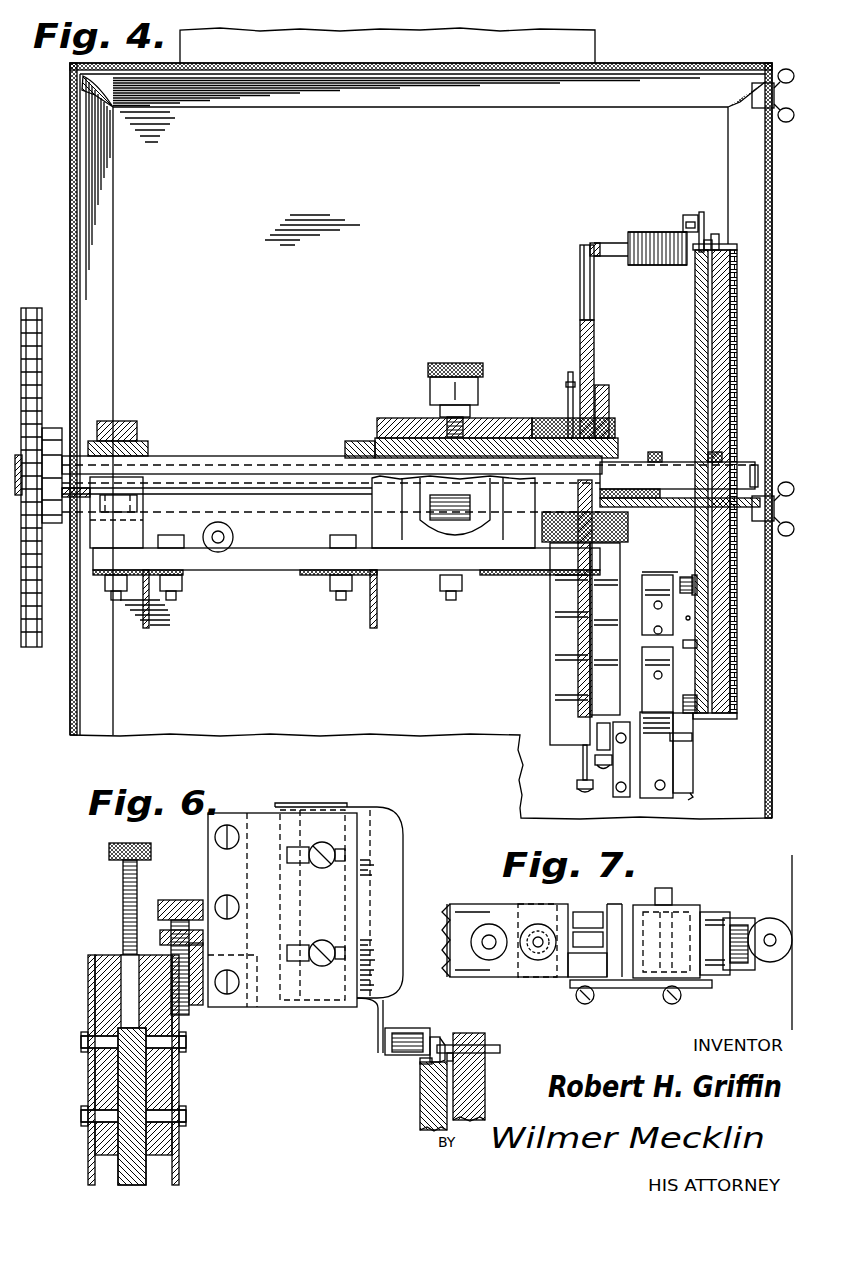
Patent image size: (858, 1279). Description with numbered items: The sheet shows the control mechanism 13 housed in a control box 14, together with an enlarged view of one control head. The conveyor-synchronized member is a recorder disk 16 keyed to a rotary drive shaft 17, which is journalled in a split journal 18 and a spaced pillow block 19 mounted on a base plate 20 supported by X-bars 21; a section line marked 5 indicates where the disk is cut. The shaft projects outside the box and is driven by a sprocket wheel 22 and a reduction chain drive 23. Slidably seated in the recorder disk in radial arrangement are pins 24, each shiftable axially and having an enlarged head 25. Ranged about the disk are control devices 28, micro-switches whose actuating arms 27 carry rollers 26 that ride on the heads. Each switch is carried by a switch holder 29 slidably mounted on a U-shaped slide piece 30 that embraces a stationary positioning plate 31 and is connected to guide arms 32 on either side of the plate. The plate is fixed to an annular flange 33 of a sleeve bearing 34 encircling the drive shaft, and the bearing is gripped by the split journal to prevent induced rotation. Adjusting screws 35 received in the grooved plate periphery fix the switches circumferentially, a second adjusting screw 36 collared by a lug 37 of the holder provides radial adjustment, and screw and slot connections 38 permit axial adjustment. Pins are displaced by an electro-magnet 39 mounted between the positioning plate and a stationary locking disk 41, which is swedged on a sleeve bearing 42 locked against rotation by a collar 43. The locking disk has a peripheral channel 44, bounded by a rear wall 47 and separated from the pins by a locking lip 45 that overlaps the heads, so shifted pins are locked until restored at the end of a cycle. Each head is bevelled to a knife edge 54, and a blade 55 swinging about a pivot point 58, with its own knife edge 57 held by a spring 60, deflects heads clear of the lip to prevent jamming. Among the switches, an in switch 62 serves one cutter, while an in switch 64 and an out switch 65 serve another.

In FIG. 4, the section line 5- 5 is at (322, 756).
In FIG. 4, the control mechanism 13 is at (567, 325).
In FIG. 4, the control box 14 is at (690, 70).
In FIG. 4, the recorder disk 16 is at (730, 312).
In FIG. 7, the recorder disk 16 is at (482, 1095).
In FIG. 4, the drive shaft 17 is at (628, 472).
In FIG. 4, the split journal 18 is at (426, 552).
In FIG. 4, the pillow block 19 is at (148, 440).
In FIG. 4, the base plate 20 is at (286, 572).
In FIG. 4, the X-bars 21 is at (150, 613).
In FIG. 4, the sprocket wheel 22 is at (52, 526).
In FIG. 4, the reduction chain drive 23 is at (24, 312).
In FIG. 4, the pins 24 is at (732, 251).
In FIG. 7, the pins 24 is at (498, 1044).
In FIG. 4, the enlarged head 25 is at (702, 719).
In FIG. 7, the enlarged head 25 is at (445, 1042).
In FIG. 4, the rollers 26 is at (695, 581).
In FIG. 6, the rollers 26 is at (392, 1057).
In FIG. 7, the rollers 26 is at (770, 963).
In FIG. 4, the actuating arms 27 is at (697, 591).
In FIG. 6, the actuating arms 27 is at (378, 1029).
In FIG. 7, the actuating arms 27 is at (758, 930).
In FIG. 4, the control devices 28 is at (683, 776).
In FIG. 6, the control devices 28 is at (390, 852).
In FIG. 7, the control devices 28 is at (702, 908).
In FIG. 6, the switch holder 29 is at (241, 1008).
In FIG. 7, the switch holder 29 is at (626, 990).
In FIG. 4, the slide piece 30 is at (670, 573).
In FIG. 6, the slide piece 30 is at (93, 947).
In FIG. 7, the slide piece 30 is at (464, 903).
In FIG. 4, the positioning plate 31 is at (580, 332).
In FIG. 6, the positioning plate 31 is at (142, 1160).
In FIG. 4, the guide arms 32 is at (566, 378).
In FIG. 6, the guide arms 32 is at (82, 1160).
In FIG. 7, the guide arms 32 is at (448, 903).
In FIG. 4, the annular flange 33 is at (604, 385).
In FIG. 4, the sleeve bearing 34 is at (512, 434).
In FIG. 4, the adjusting screws 35 is at (578, 790).
In FIG. 6, the adjusting screws 35 is at (104, 853).
In FIG. 7, the adjusting screws 35 is at (495, 925).
In FIG. 4, the second adjusting screw 36 is at (603, 766).
In FIG. 6, the second adjusting screw 36 is at (168, 892).
In FIG. 7, the second adjusting screw 36 is at (530, 960).
In FIG. 4, the lug 37 is at (596, 740).
In FIG. 6, the lug 37 is at (155, 930).
In FIG. 7, the lug 37 is at (557, 977).
In FIG. 4, the screw and slot connections 38 is at (674, 737).
In FIG. 6, the screw and slot connections 38 is at (318, 938).
In FIG. 7, the screw and slot connections 38 is at (672, 1004).
In FIG. 4, the electro-magnet 39 is at (663, 266).
In FIG. 4, the locking disk 41 is at (700, 384).
In FIG. 6, the locking disk 41 is at (422, 1118).
In FIG. 4, the sleeve bearing 42 is at (667, 456).
In FIG. 4, the collar 43 is at (656, 508).
In FIG. 4, the peripheral channel 44 is at (698, 704).
In FIG. 6, the peripheral channel 44 is at (422, 1090).
In FIG. 7, the locking lip 45 is at (485, 1066).
In FIG. 6, the rear wall 47 is at (421, 1066).
In FIG. 7, the knife edge 54 is at (435, 1036).
In FIG. 4, the blade 55 is at (704, 212).
In FIG. 4, the knife edge 57 is at (712, 246).
In FIG. 4, the pivot point 58 is at (716, 236).
In FIG. 4, the spring 60 is at (689, 214).
In FIG. 4, the in switch 62 is at (690, 618).
In FIG. 4, the in switch 64 is at (693, 797).
In FIG. 4, the out switch 65 is at (690, 690).